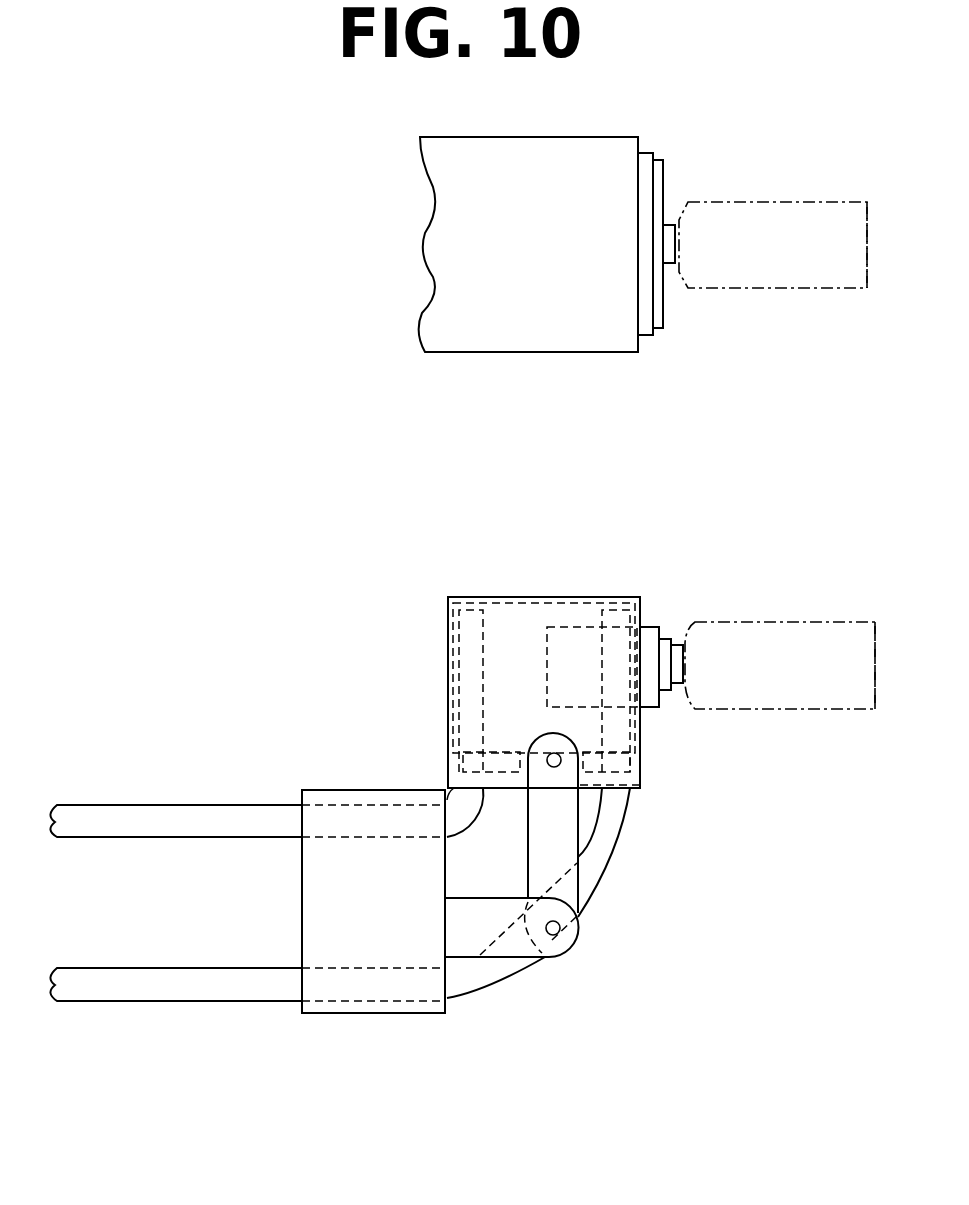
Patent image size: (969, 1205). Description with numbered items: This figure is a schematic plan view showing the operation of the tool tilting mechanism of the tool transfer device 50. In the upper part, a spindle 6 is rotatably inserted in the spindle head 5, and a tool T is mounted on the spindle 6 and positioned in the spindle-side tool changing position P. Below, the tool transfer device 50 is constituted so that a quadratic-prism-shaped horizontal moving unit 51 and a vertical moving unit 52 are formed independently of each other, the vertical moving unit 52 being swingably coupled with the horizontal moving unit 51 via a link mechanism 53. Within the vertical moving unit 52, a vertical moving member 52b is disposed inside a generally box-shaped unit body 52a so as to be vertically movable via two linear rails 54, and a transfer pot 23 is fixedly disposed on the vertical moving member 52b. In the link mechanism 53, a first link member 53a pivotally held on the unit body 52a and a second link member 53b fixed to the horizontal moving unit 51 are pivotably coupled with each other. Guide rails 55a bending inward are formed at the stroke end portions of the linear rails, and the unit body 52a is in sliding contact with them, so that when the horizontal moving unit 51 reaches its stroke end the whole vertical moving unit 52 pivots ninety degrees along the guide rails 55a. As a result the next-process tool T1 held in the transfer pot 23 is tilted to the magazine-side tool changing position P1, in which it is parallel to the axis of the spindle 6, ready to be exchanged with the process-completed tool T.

The spindle head 5 is at (456, 353).
The spindle 6 is at (664, 178).
The spindle-side tool changing position P is at (690, 237).
The tool T is at (840, 200).
The tool transfer device 50 is at (400, 622).
The vertical moving unit 52 is at (525, 622).
The unit body 52a is at (447, 628).
The vertical moving member 52b is at (544, 642).
The transfer pot 23 is at (570, 627).
The horizontal moving unit 51 is at (322, 787).
The link mechanism 53 is at (559, 905).
The first link member 53a is at (578, 857).
The second link member 53b is at (507, 958).
The linear rails 54 is at (455, 767).
The guide rails 55a is at (460, 691).
The magazine-side tool changing position P1 is at (690, 665).
The next-process tool T1 is at (835, 620).